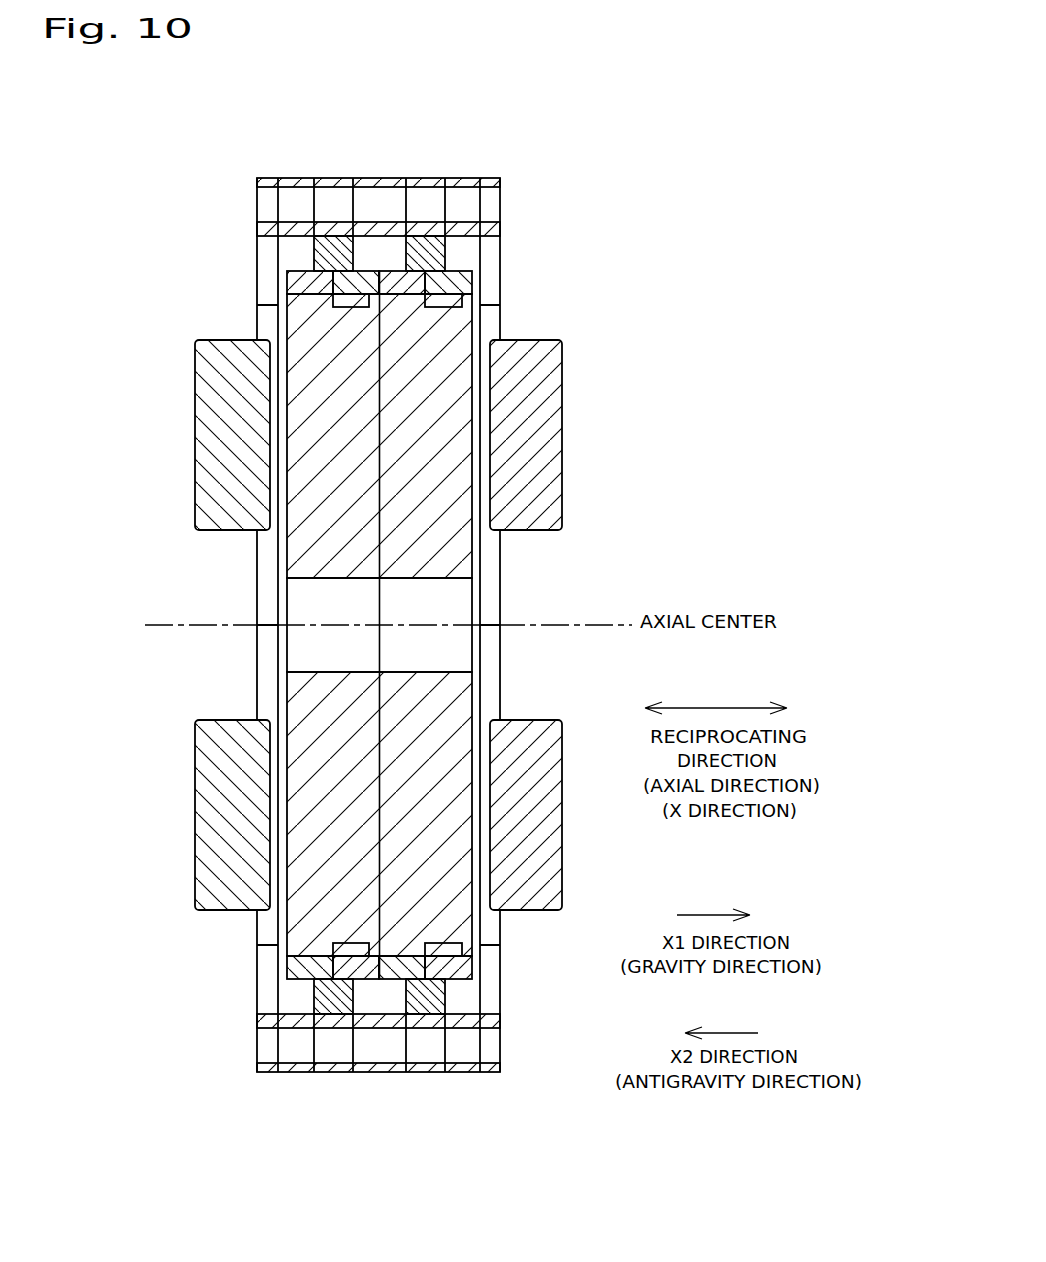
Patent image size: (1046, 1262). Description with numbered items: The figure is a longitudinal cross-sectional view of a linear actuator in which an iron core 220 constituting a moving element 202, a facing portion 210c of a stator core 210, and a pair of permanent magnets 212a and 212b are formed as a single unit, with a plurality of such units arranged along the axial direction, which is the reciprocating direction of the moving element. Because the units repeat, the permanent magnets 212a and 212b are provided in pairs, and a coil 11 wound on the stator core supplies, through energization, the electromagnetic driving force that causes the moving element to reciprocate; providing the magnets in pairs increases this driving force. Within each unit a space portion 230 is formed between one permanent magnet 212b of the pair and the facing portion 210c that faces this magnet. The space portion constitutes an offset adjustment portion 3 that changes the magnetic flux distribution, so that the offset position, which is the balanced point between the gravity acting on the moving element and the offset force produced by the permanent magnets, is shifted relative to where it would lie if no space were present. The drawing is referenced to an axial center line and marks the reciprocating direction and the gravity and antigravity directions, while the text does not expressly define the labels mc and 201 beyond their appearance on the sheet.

The offset adjustment portion 3 is at (680, 294).
The magnetic center mc is at (714, 381).
The coil 11 is at (203, 408).
The mover 201 is at (632, 541).
The moving element 202 is at (545, 157).
The stator core 210 is at (271, 565).
The facing portion 210c is at (270, 307).
The permanent magnet 212a is at (393, 283).
The permanent magnet 212b is at (367, 283).
The iron core 220 is at (330, 240).
The space portion 230 is at (343, 308).